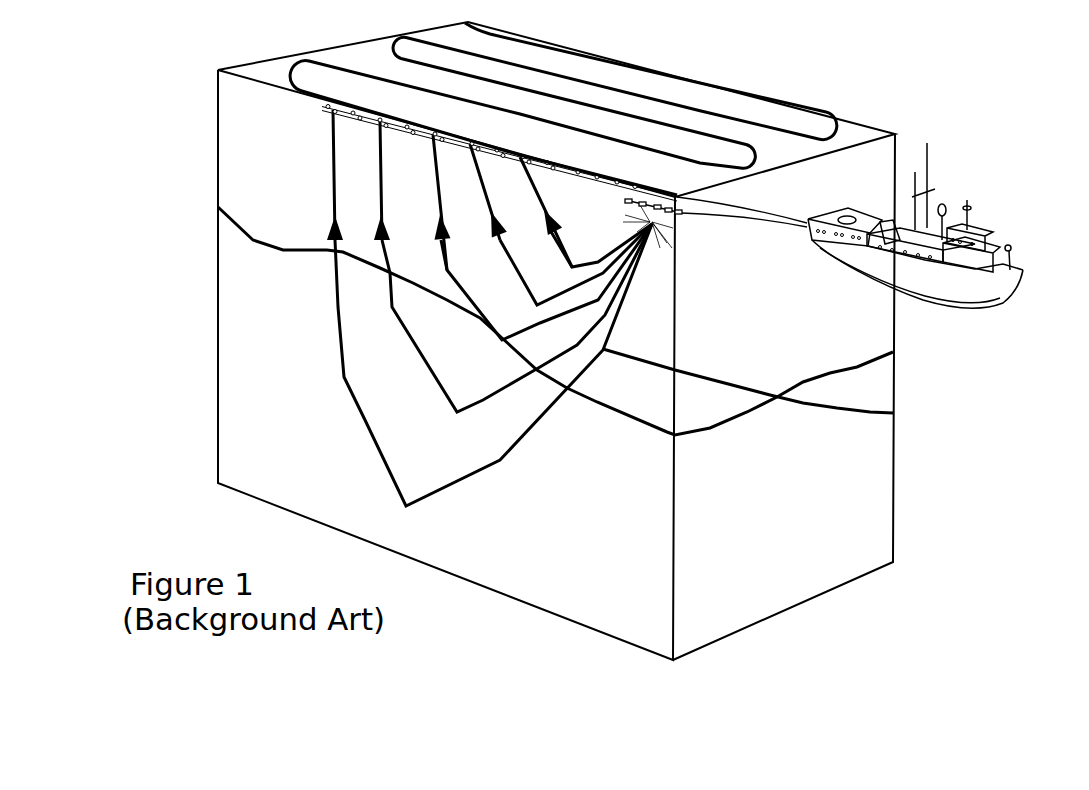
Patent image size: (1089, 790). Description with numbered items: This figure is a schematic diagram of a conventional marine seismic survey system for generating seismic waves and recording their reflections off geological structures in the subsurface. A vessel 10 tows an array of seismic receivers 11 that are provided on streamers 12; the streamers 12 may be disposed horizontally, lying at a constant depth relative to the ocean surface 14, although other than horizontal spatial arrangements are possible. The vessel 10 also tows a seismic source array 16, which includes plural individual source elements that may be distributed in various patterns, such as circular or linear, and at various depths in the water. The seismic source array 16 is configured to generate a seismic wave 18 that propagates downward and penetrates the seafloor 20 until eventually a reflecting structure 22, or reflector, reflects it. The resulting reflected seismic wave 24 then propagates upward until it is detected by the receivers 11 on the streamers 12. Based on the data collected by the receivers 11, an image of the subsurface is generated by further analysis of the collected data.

The vessel 10 is at (990, 220).
The seismic receivers 11 is at (435, 150).
The streamers 12 is at (495, 140).
The ocean surface 14 is at (362, 54).
The seismic source array 16 is at (677, 197).
The seismic wave 18 is at (893, 413).
The seafloor 20 is at (860, 357).
The reflecting structure 22 is at (297, 352).
The reflected seismic wave 24 is at (240, 246).